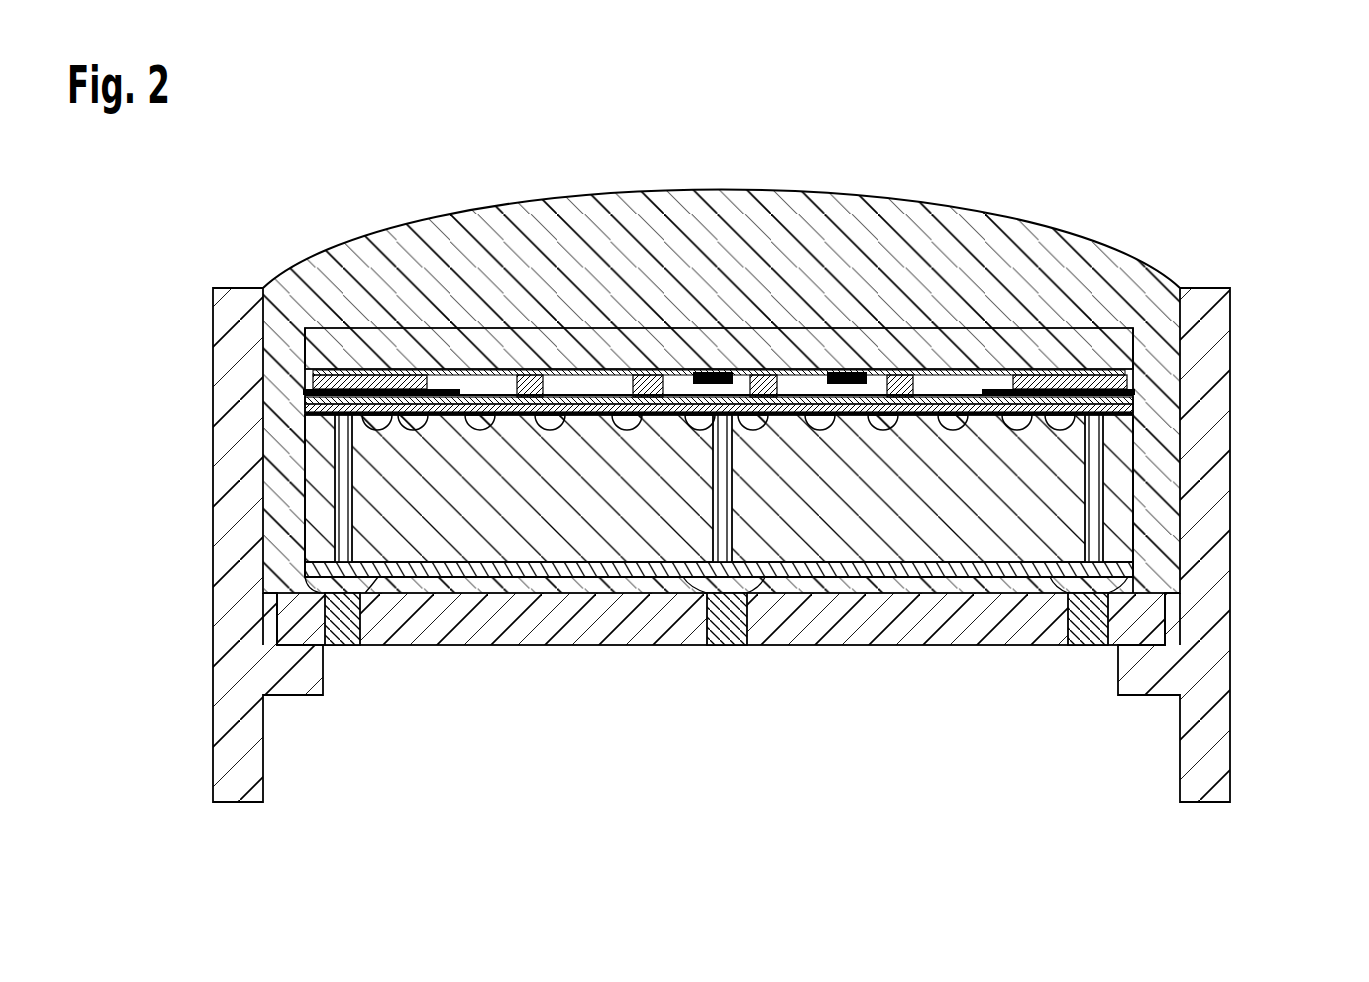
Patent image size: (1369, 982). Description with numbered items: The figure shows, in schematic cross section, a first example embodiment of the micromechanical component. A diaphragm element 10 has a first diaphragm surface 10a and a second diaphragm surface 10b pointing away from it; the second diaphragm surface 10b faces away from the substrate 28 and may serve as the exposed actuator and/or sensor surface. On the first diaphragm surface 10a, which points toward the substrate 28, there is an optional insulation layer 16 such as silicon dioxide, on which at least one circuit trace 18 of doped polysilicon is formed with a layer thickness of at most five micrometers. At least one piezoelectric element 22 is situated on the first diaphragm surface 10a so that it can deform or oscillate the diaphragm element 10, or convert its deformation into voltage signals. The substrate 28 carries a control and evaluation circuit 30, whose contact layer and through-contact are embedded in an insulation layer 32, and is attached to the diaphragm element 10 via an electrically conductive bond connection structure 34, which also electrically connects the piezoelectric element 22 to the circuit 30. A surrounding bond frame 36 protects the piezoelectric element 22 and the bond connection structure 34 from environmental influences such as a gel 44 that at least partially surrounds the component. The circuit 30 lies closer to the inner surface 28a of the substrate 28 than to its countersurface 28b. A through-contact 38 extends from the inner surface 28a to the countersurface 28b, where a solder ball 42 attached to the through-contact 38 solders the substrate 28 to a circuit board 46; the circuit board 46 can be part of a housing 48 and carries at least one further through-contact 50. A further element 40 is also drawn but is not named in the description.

The diaphragm element 10 is at (719, 433).
The first diaphragm surface 10a is at (952, 470).
The second diaphragm surface 10b is at (998, 322).
The insulation layer 16 is at (440, 376).
The circuit trace 18 is at (337, 374).
The piezoelectric element 22 is at (714, 362).
The substrate 28 is at (805, 433).
The inner surface 28a is at (950, 404).
The countersurface 28b is at (855, 572).
The control and evaluation circuit 30 is at (1072, 405).
The insulation layer 32 is at (302, 396).
The electrically conductive bond connection structure 34 is at (490, 378).
The bond frame 36 is at (373, 369).
The through-contact 38 is at (333, 485).
The adhesive layer 40 is at (1017, 566).
The solder ball 42 is at (375, 585).
The gel 44 is at (621, 240).
The circuit board 46 is at (567, 630).
The housing 48 is at (1240, 667).
The further through-contact 50 is at (343, 628).